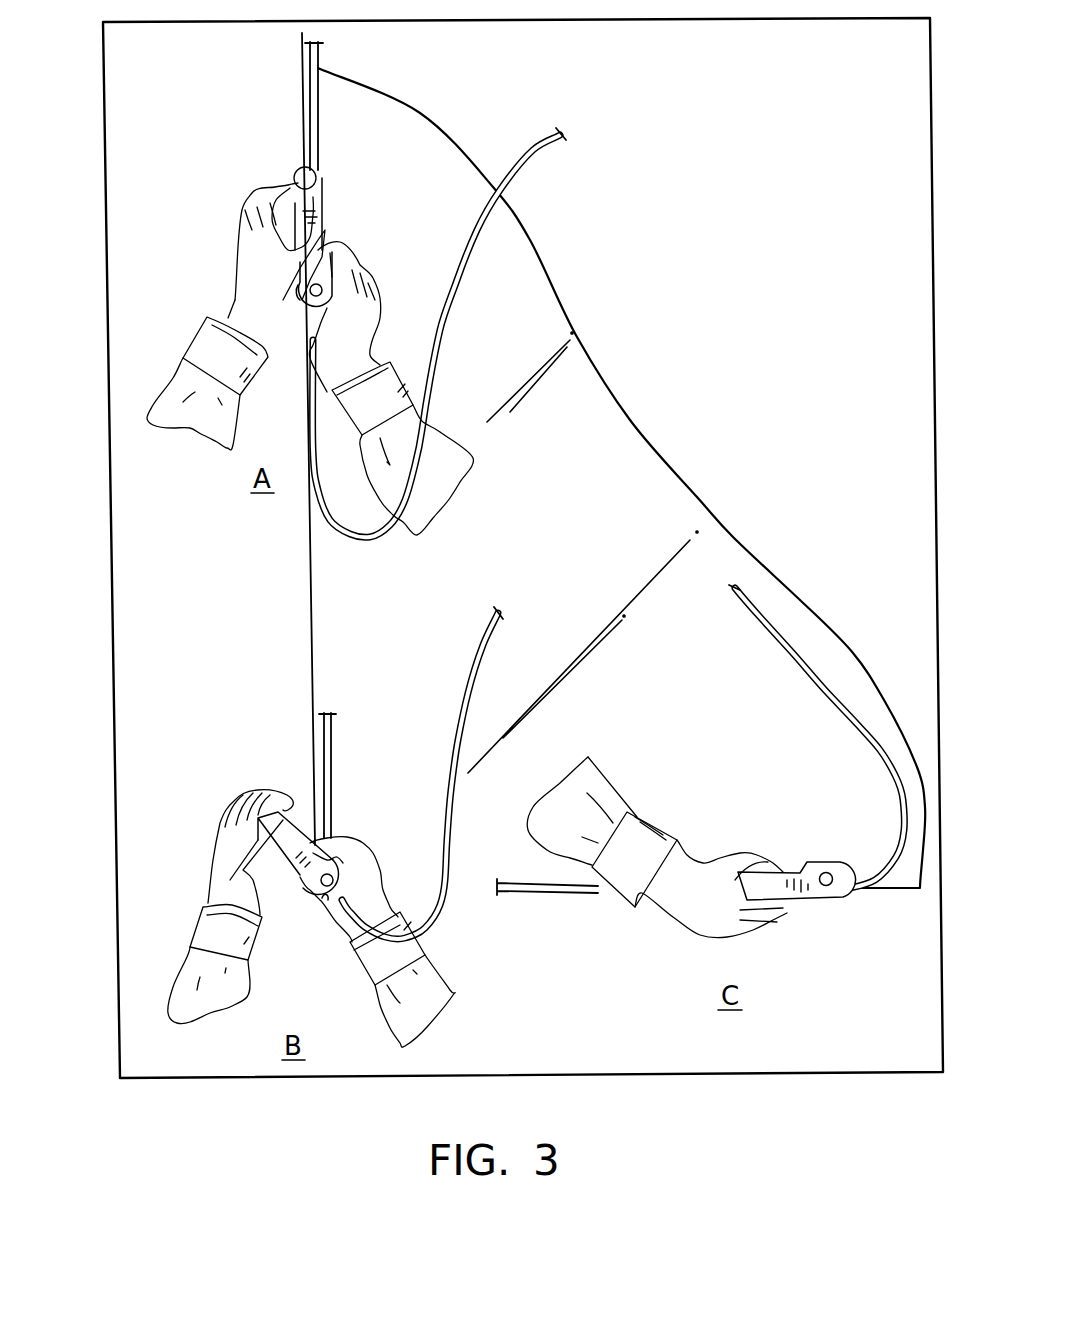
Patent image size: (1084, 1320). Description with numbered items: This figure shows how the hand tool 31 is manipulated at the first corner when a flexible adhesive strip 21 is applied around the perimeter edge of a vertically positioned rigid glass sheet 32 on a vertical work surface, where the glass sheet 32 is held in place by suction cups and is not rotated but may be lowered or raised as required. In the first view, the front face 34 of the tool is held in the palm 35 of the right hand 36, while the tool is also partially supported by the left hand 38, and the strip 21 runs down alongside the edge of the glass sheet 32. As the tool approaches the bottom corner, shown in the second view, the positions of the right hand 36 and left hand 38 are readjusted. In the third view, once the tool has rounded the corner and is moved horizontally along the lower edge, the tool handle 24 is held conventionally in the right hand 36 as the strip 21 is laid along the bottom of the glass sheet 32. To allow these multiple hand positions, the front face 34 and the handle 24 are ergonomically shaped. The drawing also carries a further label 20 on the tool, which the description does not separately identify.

The clamp assembly 20 is at (325, 178).
The flexible adhesive strip 21 is at (545, 142).
The tool handle 24 is at (318, 202).
The hand tool 31 is at (320, 218).
The rigid glass sheet 32 is at (350, 676).
The front face 34 is at (306, 300).
The palm 35 is at (342, 287).
The right hand 36 is at (367, 312).
The left hand 38 is at (250, 240).